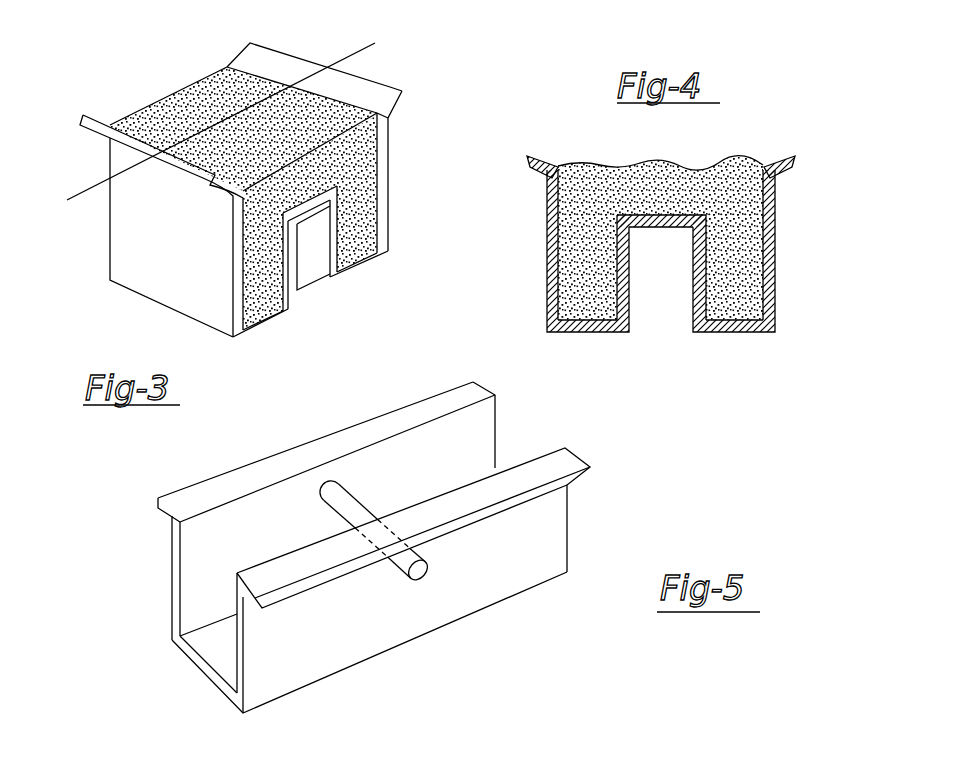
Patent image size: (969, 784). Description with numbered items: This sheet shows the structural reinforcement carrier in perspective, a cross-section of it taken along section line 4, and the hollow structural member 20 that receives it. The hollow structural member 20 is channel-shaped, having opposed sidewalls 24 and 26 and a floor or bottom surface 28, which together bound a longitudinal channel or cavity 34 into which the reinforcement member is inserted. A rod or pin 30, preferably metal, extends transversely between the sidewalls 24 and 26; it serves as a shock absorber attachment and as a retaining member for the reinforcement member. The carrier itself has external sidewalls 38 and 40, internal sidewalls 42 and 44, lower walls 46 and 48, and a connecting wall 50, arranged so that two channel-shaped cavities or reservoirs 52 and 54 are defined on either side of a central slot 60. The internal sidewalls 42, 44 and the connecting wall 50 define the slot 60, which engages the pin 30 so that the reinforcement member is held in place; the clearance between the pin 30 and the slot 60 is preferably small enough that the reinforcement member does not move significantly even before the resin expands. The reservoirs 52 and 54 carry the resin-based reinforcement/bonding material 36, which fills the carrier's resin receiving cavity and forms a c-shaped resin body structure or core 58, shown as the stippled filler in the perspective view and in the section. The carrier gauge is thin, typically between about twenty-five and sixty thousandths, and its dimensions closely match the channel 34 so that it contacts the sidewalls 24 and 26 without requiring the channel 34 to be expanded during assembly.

In FIG. 3, the section line 4- 4 is at (46, 196).
In FIG. 5, the hollow structural member 20 is at (414, 389).
In FIG. 5, the sidewall 24 is at (473, 590).
In FIG. 5, the sidewall 26 is at (172, 550).
In FIG. 5, the floor or bottom surface 28 is at (223, 668).
In FIG. 5, the rod or pin 30 is at (358, 512).
In FIG. 3, the longitudinal channel or cavity 34 is at (380, 0).
In FIG. 5, the longitudinal channel or cavity 34 is at (198, 582).
In FIG. 3, the resin-based reinforcement/bonding material 36 is at (363, 237).
In FIG. 4, the resin-based reinforcement/bonding material 36 is at (570, 170).
In FIG. 3, the external sidewall 38 is at (152, 262).
In FIG. 4, the external sidewall 38 is at (547, 227).
In FIG. 3, the side wall 40 is at (390, 177).
In FIG. 4, the side wall 40 is at (775, 216).
In FIG. 3, the internal sidewall 42 is at (297, 257).
In FIG. 4, the internal sidewall 42 is at (617, 255).
In FIG. 3, the internal sidewall 44 is at (323, 273).
In FIG. 4, the internal sidewall 44 is at (717, 228).
In FIG. 3, the lower wall 46 is at (263, 318).
In FIG. 4, the lower wall 46 is at (598, 332).
In FIG. 4, the lower wall 48 is at (727, 332).
In FIG. 3, the connecting wall 50 is at (310, 218).
In FIG. 4, the connecting wall 50 is at (656, 215).
In FIG. 4, the channel-shaped cavity or reservoir 52 is at (578, 291).
In FIG. 4, the channel-shaped cavity or reservoir 54 is at (745, 291).
In FIG. 3, the c-shaped resin body structure or core 58 is at (200, 108).
In FIG. 4, the c-shaped resin body structure or core 58 is at (615, 153).
In FIG. 4, the slot 60 is at (651, 317).